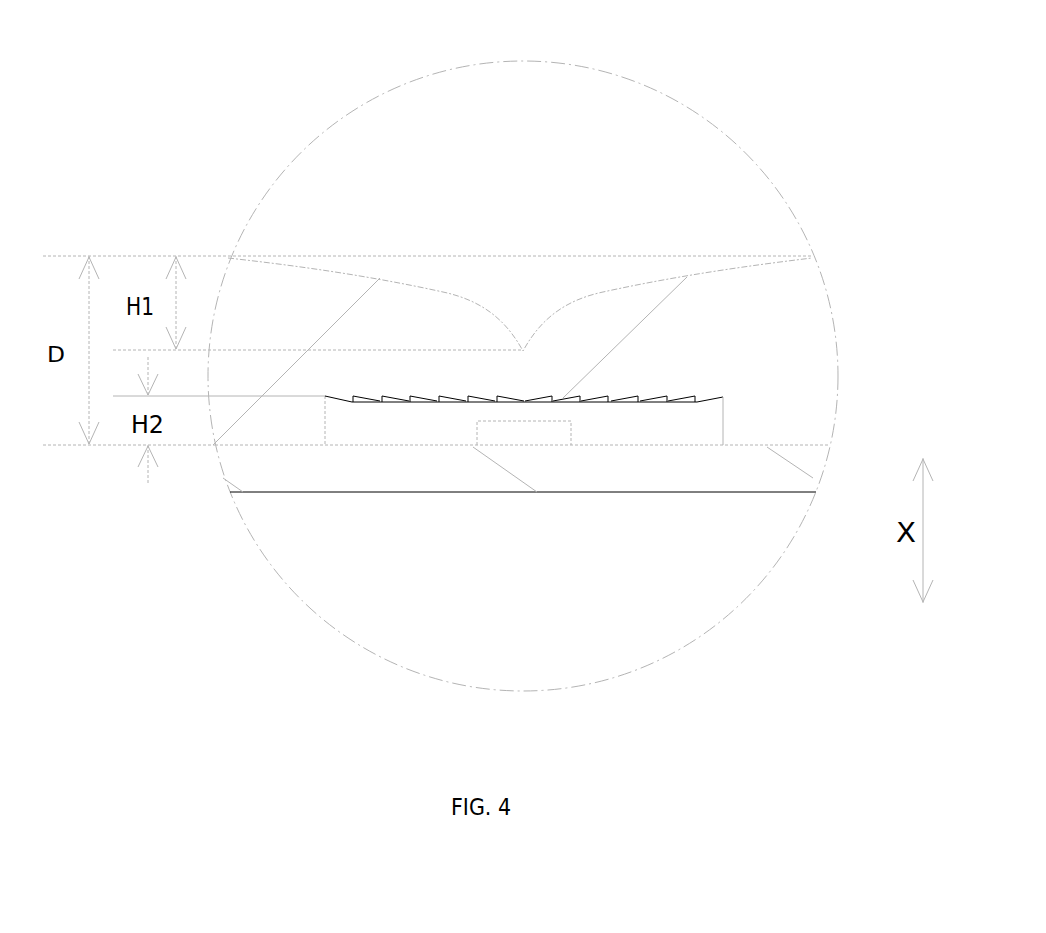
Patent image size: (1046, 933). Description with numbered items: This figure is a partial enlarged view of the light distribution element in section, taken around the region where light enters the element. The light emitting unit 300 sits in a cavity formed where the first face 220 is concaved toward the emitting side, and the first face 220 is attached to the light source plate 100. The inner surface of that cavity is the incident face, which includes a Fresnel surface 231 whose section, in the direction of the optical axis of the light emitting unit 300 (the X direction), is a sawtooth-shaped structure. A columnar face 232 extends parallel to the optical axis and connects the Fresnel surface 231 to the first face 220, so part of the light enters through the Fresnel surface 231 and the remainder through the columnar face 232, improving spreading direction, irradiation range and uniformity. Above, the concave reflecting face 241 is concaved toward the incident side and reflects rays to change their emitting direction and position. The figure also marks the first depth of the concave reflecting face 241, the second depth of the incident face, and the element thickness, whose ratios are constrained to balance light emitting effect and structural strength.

The light source plate 100 is at (712, 468).
The first face 220 is at (290, 445).
The Fresnel surface 231 is at (697, 400).
The columnar face 232 is at (723, 423).
The concave reflecting face 241 is at (585, 302).
The light emitting unit 300 is at (533, 432).